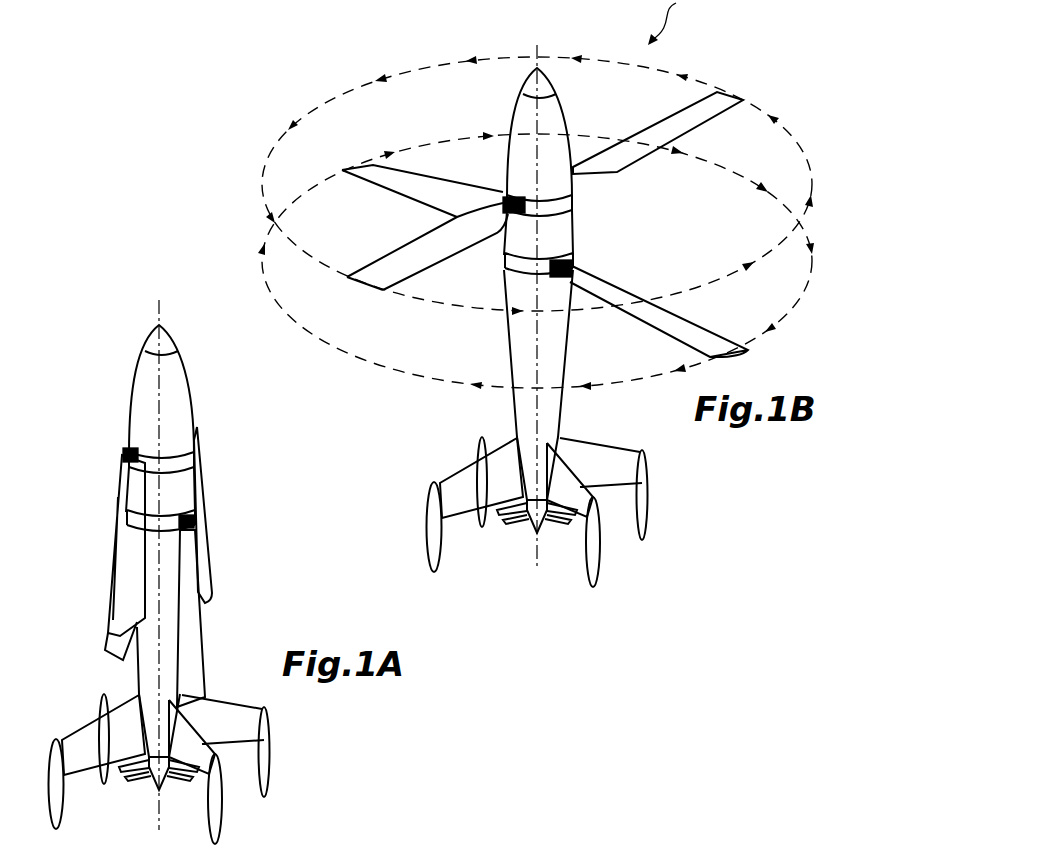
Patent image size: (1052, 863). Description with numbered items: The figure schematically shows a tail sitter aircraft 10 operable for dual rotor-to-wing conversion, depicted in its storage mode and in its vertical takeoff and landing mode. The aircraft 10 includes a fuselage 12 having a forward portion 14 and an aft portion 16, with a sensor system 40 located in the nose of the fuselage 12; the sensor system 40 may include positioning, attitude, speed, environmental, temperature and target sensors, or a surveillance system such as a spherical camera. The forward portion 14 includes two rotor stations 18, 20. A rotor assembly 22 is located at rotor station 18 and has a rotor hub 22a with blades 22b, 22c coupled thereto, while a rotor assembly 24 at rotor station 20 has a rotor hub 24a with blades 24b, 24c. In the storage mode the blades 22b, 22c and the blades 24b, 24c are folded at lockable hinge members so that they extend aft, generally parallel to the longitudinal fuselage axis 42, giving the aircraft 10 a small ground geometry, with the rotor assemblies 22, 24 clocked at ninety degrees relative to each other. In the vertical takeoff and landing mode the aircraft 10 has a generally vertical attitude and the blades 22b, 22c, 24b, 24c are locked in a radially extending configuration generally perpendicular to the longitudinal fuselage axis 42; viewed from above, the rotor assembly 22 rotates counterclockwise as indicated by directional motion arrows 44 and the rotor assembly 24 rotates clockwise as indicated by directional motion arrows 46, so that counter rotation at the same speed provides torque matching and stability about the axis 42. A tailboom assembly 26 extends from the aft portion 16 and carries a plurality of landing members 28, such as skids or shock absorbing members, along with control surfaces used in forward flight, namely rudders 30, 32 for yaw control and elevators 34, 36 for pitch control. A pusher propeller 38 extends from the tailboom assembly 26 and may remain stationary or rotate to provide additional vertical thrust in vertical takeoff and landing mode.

In FIG. 1A, the tail sitter aircraft 10 is at (106, 408).
In FIG. 1A, the fuselage 12 is at (188, 386).
In FIG. 1B, the fuselage 12 is at (513, 111).
In FIG. 1A, the forward portion 14 is at (187, 482).
In FIG. 1B, the forward portion 14 is at (572, 225).
In FIG. 1A, the aft portion 16 is at (172, 657).
In FIG. 1B, the aft portion 16 is at (560, 403).
In FIG. 1A, the rotor station 18 is at (187, 455).
In FIG. 1B, the rotor station 18 is at (575, 193).
In FIG. 1A, the rotor station 20 is at (157, 527).
In FIG. 1B, the rotor station 20 is at (567, 262).
In FIG. 1A, the rotor assembly 22 is at (165, 531).
In FIG. 1B, the rotor assembly 22 is at (546, 156).
In FIG. 1A, the rotor hub 22a is at (124, 455).
In FIG. 1B, the rotor hub 22a is at (504, 202).
In FIG. 1A, the blade 22b is at (123, 543).
In FIG. 1B, the blade 22b is at (378, 270).
In FIG. 1A, the blade 22c is at (207, 540).
In FIG. 1B, the blade 22c is at (640, 140).
In FIG. 1A, the rotor assembly 24 is at (158, 618).
In FIG. 1B, the rotor assembly 24 is at (545, 234).
In FIG. 1A, the rotor hub 24a is at (194, 520).
In FIG. 1B, the rotor hub 24a is at (550, 271).
In FIG. 1A, the blade 24b is at (108, 640).
In FIG. 1B, the blade 24b is at (670, 317).
In FIG. 1A, the blade 24c is at (197, 618).
In FIG. 1B, the blade 24c is at (370, 170).
In FIG. 1A, the tailboom assembly 26 is at (271, 733).
In FIG. 1B, the tailboom assembly 26 is at (649, 476).
In FIG. 1A, the landing members 28 is at (266, 780).
In FIG. 1B, the landing members 28 is at (646, 525).
In FIG. 1A, the rudder 30 is at (202, 772).
In FIG. 1B, the rudder 30 is at (582, 512).
In FIG. 1A, the rudder 32 is at (118, 698).
In FIG. 1B, the rudder 32 is at (497, 445).
In FIG. 1A, the elevator 34 is at (90, 735).
In FIG. 1B, the elevator 34 is at (460, 482).
In FIG. 1A, the elevator 36 is at (233, 715).
In FIG. 1B, the elevator 36 is at (612, 458).
In FIG. 1A, the pusher propeller 38 is at (148, 785).
In FIG. 1B, the pusher propeller 38 is at (527, 527).
In FIG. 1A, the sensor system 40 is at (166, 334).
In FIG. 1B, the sensor system 40 is at (548, 75).
In FIG. 1A, the longitudinal fuselage axis 42 is at (158, 302).
In FIG. 1B, the longitudinal fuselage axis 42 is at (537, 48).
In FIG. 1B, the directional motion arrows 44 is at (379, 80).
In FIG. 1B, the directional motion arrows 46 is at (388, 375).